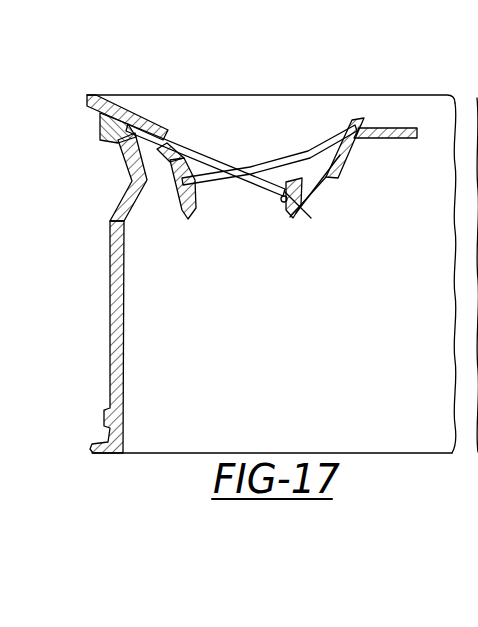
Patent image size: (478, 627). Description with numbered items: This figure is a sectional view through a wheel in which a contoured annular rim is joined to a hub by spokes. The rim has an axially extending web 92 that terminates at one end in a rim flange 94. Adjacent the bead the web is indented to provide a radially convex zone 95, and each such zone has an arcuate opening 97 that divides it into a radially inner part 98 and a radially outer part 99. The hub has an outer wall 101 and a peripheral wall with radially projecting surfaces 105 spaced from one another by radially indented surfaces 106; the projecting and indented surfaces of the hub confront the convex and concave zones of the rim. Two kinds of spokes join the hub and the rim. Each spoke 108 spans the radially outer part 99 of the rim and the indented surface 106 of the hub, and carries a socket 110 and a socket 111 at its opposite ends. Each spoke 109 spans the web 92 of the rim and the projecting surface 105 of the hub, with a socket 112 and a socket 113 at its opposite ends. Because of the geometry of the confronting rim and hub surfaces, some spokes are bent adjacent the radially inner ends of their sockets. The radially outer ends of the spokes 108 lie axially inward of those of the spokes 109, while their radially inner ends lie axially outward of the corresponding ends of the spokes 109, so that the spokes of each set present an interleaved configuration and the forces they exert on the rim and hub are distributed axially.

The web 92 is at (109, 327).
The rim flange 94 is at (92, 453).
The radially convex zone 95 is at (124, 161).
The arcuate opening 97 is at (152, 187).
The radially inner part 98 is at (234, 108).
The radially outer part 99 is at (196, 205).
The outer wall 101 is at (403, 139).
The radially projecting surface 105 is at (282, 202).
The radially indented surface 106 is at (334, 140).
The spoke 108 is at (267, 110).
The spoke 109 is at (240, 178).
The socket 110 is at (340, 178).
The socket 111 is at (166, 120).
The socket 112 is at (291, 216).
The socket 113 is at (112, 145).